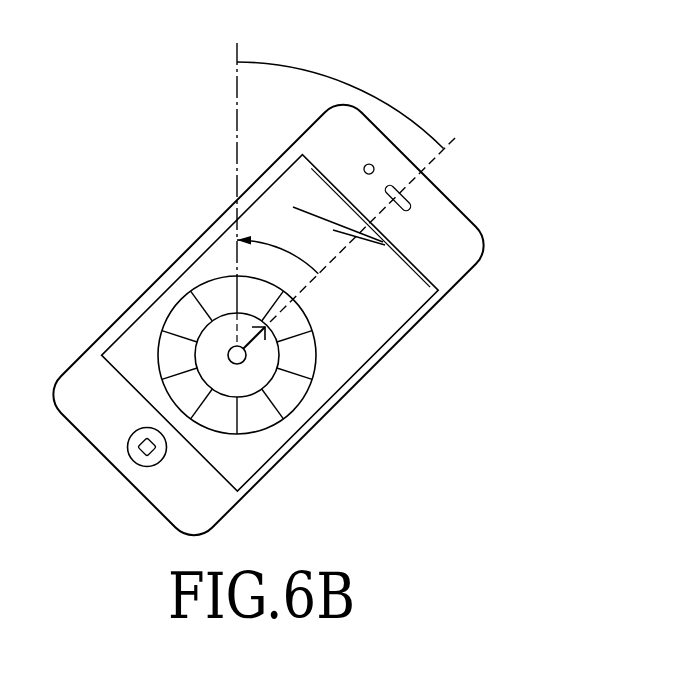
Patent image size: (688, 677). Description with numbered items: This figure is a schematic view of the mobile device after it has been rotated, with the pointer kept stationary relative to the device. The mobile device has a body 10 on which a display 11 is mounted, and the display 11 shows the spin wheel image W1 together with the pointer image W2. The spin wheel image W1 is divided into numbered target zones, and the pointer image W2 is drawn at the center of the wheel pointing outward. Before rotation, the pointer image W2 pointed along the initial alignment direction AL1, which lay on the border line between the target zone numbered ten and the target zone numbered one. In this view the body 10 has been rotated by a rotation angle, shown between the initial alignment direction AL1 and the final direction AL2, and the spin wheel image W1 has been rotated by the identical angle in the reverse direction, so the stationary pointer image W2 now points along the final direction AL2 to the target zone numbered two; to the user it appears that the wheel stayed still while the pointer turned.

The body 10 is at (463, 278).
The display 11 is at (405, 273).
The spin wheel image W1 is at (320, 372).
The pointer image W2 is at (244, 357).
The initial alignment direction AL1 is at (235, 178).
The final direction AL2 is at (375, 213).